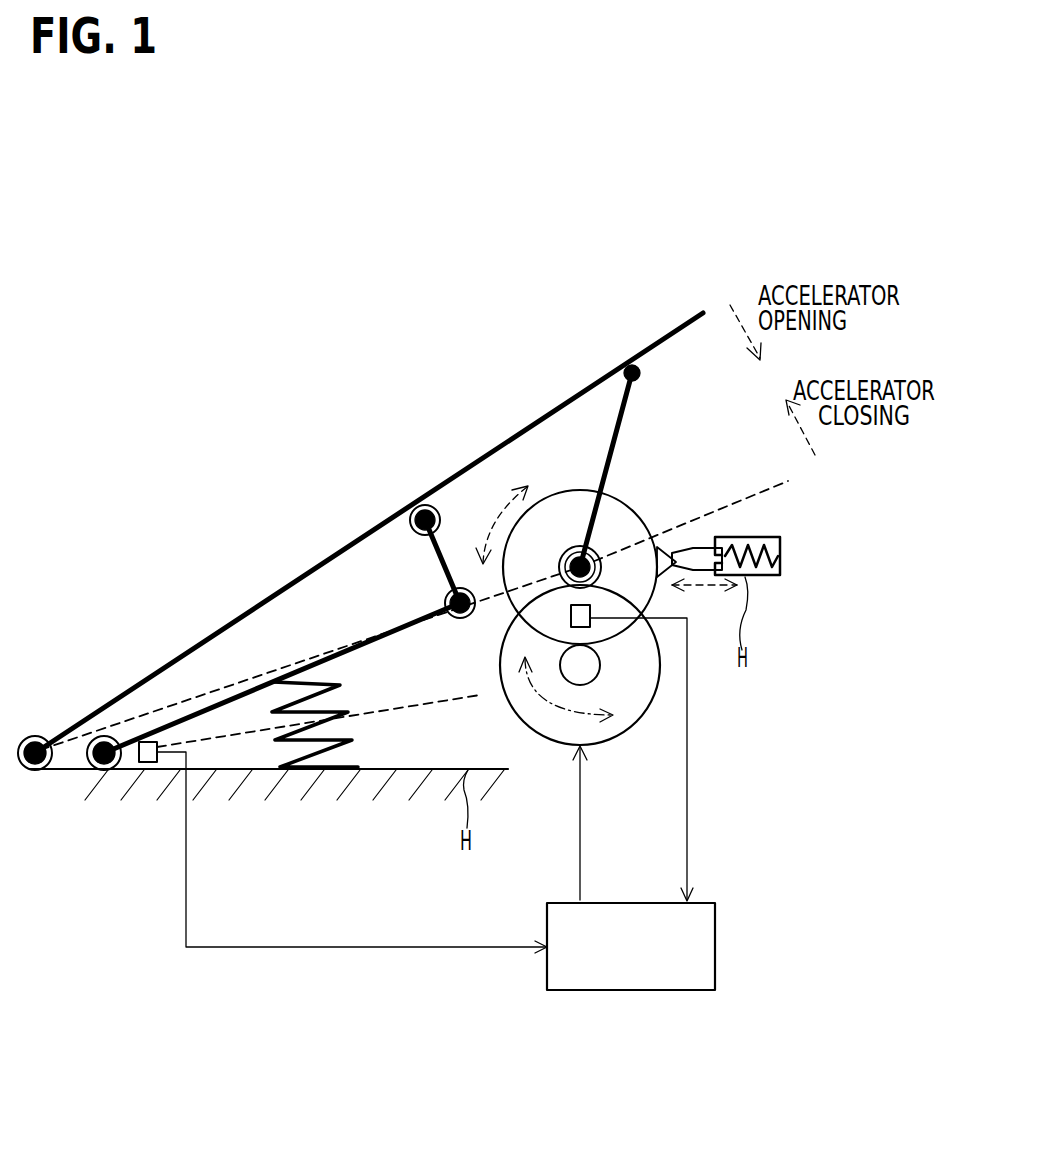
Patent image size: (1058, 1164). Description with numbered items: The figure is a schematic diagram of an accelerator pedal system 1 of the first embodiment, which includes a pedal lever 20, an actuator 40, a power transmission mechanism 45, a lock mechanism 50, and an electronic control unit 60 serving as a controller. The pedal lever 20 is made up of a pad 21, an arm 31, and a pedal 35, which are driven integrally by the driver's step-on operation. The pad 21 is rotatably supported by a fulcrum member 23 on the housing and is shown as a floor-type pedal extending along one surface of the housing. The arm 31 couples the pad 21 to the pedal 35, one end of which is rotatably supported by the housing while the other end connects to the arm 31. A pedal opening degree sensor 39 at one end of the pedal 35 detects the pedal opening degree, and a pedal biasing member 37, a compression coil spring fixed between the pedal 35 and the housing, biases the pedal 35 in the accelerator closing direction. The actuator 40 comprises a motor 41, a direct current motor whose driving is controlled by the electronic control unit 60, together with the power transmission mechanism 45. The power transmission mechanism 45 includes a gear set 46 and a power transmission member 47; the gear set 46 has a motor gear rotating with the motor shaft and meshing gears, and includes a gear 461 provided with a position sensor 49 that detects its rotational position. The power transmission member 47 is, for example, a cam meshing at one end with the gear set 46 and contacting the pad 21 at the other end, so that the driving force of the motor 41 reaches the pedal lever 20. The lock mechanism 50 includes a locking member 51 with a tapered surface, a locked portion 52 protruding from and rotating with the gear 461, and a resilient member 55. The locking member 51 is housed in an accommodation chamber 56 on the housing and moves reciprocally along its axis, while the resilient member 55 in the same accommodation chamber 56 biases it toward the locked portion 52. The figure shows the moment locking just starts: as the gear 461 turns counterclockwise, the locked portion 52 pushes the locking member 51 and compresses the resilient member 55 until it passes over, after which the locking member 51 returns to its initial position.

The accelerator pedal system 1 is at (105, 944).
The pedal lever 20 is at (115, 658).
The pad 21 is at (287, 585).
The fulcrum member 23 is at (33, 737).
The arm 31 is at (440, 560).
The pedal 35 is at (217, 707).
The pedal biasing member 37 is at (342, 750).
The pedal opening degree sensor 39 is at (147, 763).
The actuator 40 is at (620, 748).
The motor 41 is at (545, 732).
The power transmission mechanism 45 is at (634, 430).
The gear set 46 is at (553, 486).
The gear 461 is at (573, 510).
The power transmission member 47 is at (616, 427).
The position sensor 49 is at (571, 613).
The lock mechanism 50 is at (789, 523).
The locking member 51 is at (703, 550).
The locked portion 52 is at (662, 545).
The resilient member 55 is at (747, 540).
The accommodation chamber 56 is at (766, 576).
The electronic control unit 60 is at (716, 922).